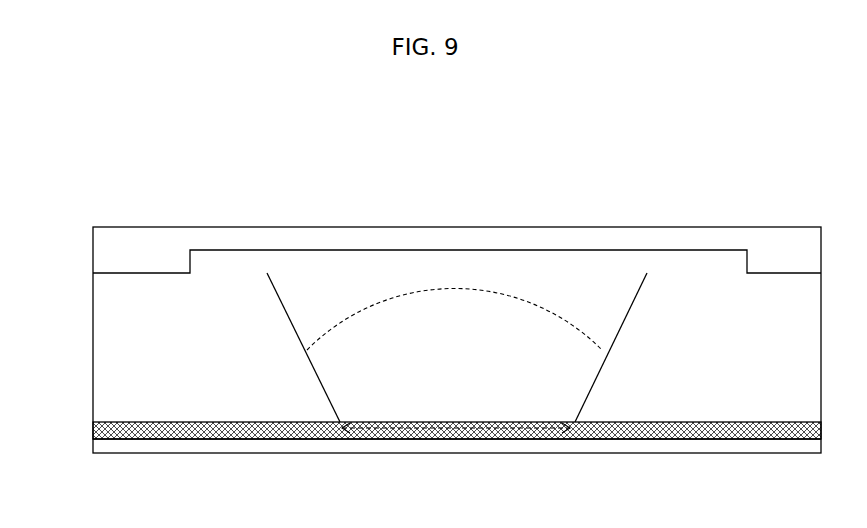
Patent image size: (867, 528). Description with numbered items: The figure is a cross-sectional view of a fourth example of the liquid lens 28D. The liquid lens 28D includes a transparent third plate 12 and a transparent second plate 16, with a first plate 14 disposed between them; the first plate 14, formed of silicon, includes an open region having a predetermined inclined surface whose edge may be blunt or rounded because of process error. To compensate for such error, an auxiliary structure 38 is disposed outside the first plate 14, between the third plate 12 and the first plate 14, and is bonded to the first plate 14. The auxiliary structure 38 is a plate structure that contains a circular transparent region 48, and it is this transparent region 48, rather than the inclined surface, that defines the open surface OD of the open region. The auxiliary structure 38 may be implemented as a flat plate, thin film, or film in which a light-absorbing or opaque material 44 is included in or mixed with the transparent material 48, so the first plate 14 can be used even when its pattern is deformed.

The liquid lens 28D is at (779, 148).
The second plate 16 is at (88, 252).
The first plate 14 is at (88, 350).
The auxiliary structure 38 is at (88, 431).
The third plate 12 is at (88, 446).
The light-absorbing material 44 is at (275, 434).
The transparent region 48 is at (457, 434).